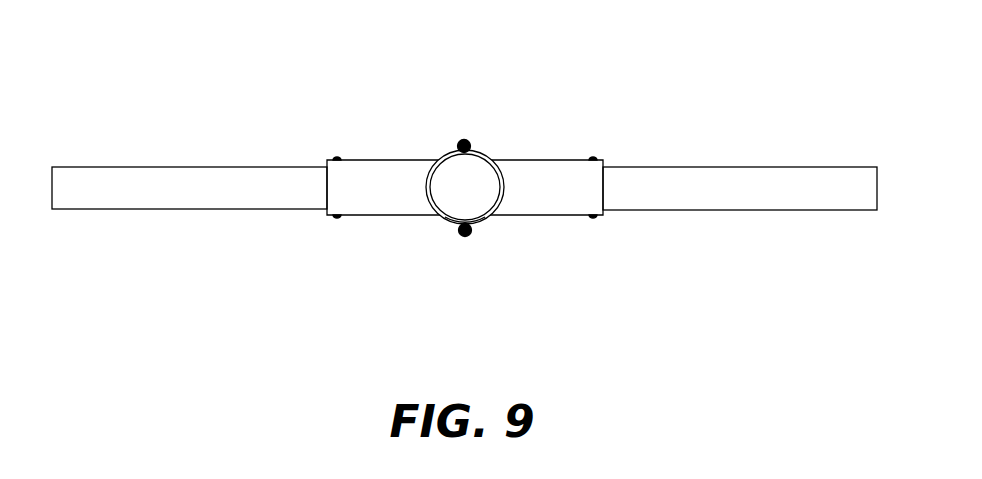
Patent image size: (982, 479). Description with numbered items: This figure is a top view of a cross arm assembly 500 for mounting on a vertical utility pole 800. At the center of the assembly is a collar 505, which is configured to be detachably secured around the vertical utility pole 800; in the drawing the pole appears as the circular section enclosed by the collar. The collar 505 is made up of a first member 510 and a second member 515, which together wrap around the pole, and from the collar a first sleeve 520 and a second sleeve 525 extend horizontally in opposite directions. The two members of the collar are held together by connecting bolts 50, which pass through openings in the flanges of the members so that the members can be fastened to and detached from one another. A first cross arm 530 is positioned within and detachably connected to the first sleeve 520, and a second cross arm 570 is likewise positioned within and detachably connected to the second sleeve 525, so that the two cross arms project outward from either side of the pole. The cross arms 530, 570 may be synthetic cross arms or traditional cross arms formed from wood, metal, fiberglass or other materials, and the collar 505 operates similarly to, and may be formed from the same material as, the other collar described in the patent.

The cross arm assembly 500 is at (588, 83).
The first cross arm 530 is at (190, 176).
The second cross arm 570 is at (773, 177).
The first sleeve 520 is at (376, 171).
The second sleeve 525 is at (569, 170).
The second member 515 is at (440, 160).
The first member 510 is at (500, 170).
The collar 505 is at (479, 221).
The vertical utility pole 800 is at (465, 187).
The bolt 50 is at (471, 147).